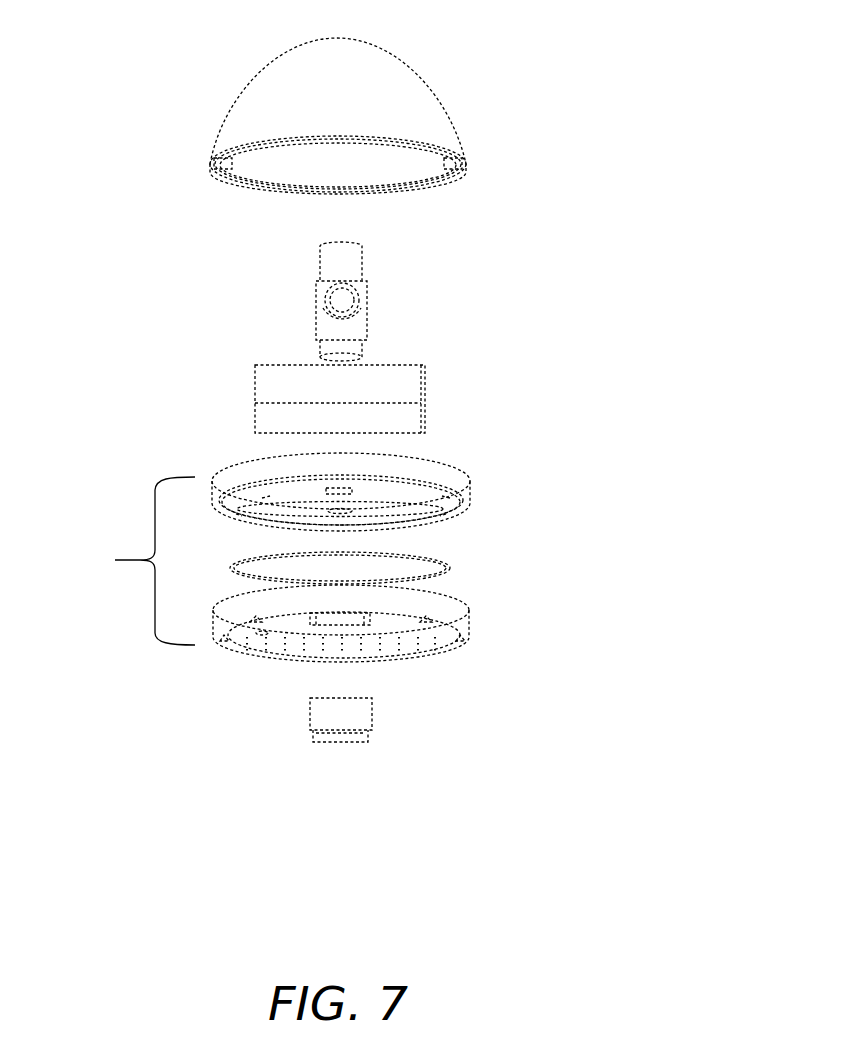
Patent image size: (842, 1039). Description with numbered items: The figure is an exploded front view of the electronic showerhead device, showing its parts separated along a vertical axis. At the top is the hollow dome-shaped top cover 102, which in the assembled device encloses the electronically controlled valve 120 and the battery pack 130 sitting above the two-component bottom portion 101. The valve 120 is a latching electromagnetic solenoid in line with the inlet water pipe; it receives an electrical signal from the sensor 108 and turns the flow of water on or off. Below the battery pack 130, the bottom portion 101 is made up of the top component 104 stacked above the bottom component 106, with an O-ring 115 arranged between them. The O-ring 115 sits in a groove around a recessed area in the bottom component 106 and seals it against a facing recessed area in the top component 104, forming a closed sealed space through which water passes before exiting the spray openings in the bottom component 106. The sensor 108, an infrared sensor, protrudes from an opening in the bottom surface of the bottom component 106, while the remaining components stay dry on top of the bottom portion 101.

The two-component bottom portion 101 is at (127, 561).
The hollow dome-shaped top cover 102 is at (435, 107).
The top component 104 is at (450, 490).
The bottom component 106 is at (467, 610).
The sensor 108 is at (358, 712).
The O-ring 115 is at (450, 563).
The electronically controlled valve 120 is at (365, 298).
The battery pack 130 is at (412, 383).